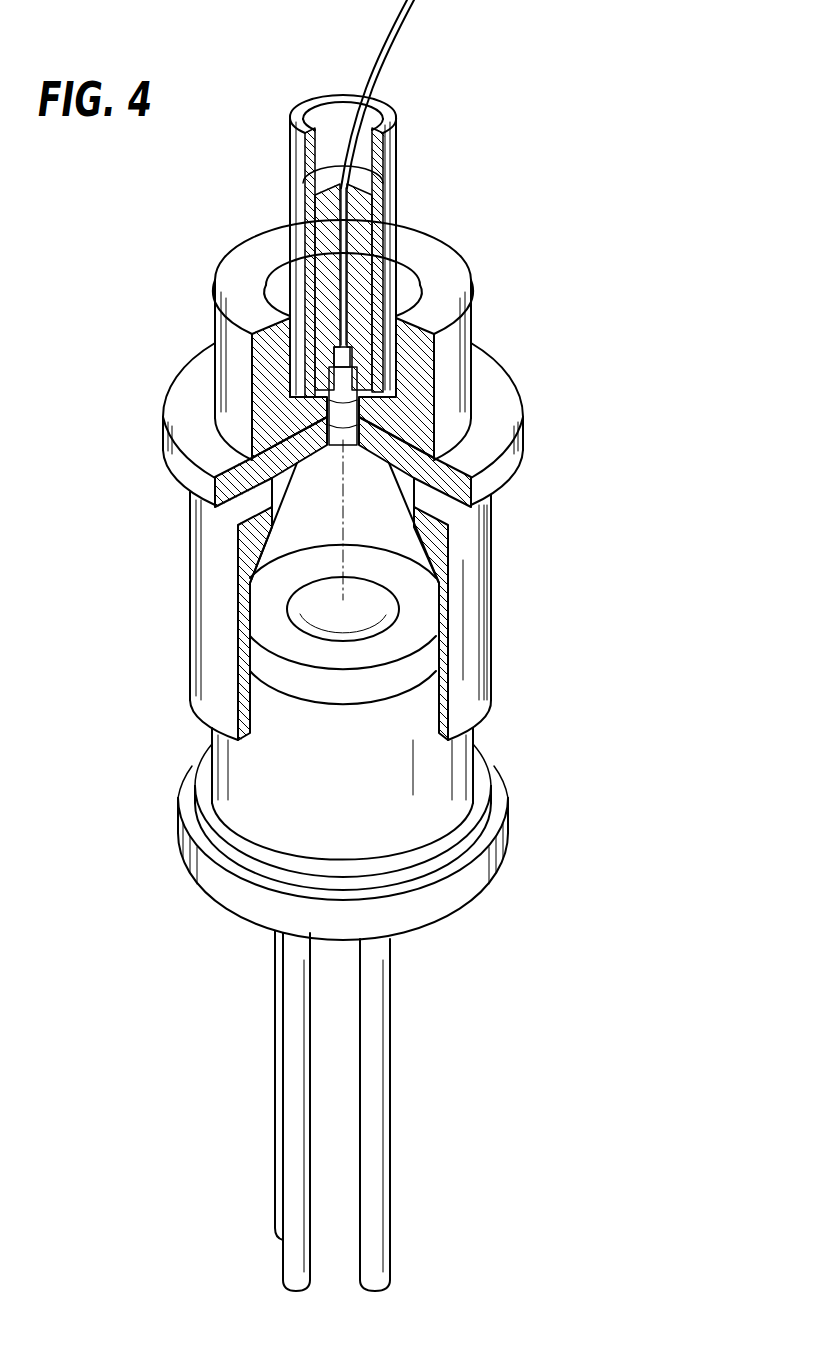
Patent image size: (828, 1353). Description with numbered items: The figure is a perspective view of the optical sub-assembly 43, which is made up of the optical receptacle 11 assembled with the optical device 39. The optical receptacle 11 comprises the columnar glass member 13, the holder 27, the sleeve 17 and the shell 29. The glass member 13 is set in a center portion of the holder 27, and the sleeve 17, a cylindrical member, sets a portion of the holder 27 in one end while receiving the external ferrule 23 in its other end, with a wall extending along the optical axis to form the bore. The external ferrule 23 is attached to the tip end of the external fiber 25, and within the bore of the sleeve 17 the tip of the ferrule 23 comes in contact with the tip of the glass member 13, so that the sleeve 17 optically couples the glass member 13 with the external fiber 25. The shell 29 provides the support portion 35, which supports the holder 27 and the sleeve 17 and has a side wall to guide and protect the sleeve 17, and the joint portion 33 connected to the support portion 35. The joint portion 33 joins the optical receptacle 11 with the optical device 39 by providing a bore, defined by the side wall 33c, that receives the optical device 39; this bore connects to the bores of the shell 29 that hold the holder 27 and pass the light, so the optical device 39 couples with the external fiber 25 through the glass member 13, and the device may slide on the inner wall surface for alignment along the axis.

The optical receptacle 11 is at (615, 201).
The glass member 13 is at (320, 338).
The sleeve 17 is at (400, 205).
The external ferrule 23 is at (353, 160).
The external fiber 25 is at (390, 27).
The holder 27 is at (352, 345).
The shell 29 is at (520, 385).
The joint portion 33 is at (150, 407).
The side wall 33c is at (445, 596).
The support portion 35 is at (150, 287).
The optical device 39 is at (473, 763).
The optical sub-assembly 43 is at (666, 680).